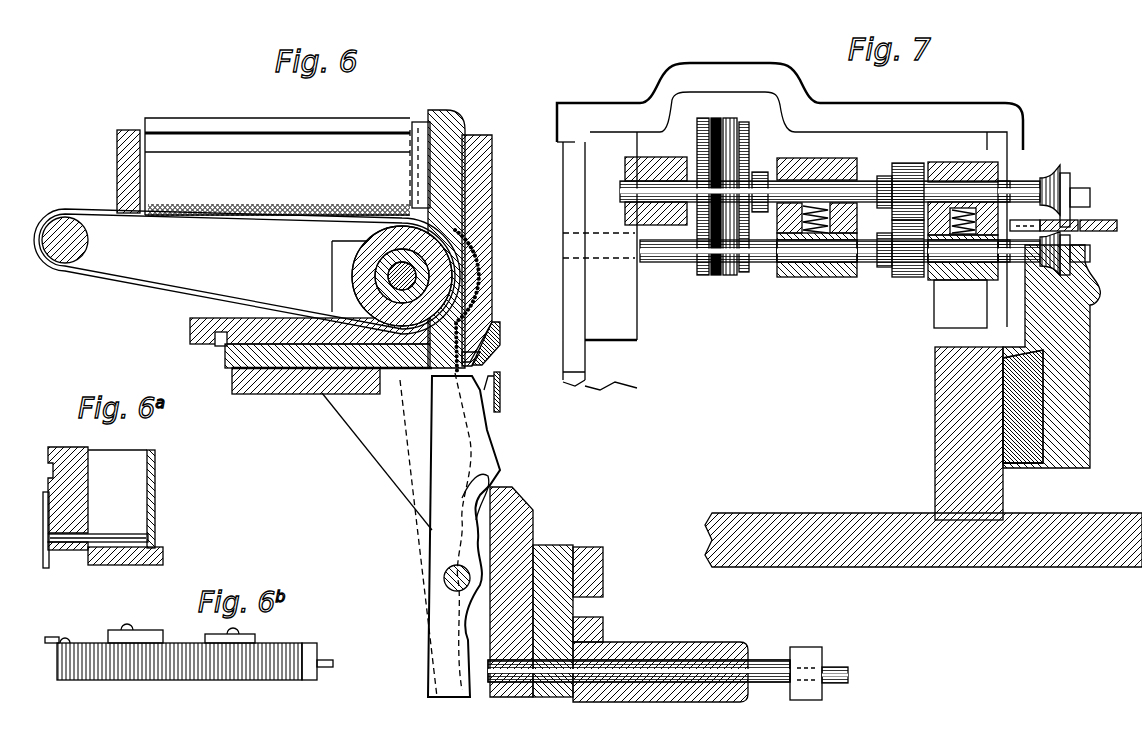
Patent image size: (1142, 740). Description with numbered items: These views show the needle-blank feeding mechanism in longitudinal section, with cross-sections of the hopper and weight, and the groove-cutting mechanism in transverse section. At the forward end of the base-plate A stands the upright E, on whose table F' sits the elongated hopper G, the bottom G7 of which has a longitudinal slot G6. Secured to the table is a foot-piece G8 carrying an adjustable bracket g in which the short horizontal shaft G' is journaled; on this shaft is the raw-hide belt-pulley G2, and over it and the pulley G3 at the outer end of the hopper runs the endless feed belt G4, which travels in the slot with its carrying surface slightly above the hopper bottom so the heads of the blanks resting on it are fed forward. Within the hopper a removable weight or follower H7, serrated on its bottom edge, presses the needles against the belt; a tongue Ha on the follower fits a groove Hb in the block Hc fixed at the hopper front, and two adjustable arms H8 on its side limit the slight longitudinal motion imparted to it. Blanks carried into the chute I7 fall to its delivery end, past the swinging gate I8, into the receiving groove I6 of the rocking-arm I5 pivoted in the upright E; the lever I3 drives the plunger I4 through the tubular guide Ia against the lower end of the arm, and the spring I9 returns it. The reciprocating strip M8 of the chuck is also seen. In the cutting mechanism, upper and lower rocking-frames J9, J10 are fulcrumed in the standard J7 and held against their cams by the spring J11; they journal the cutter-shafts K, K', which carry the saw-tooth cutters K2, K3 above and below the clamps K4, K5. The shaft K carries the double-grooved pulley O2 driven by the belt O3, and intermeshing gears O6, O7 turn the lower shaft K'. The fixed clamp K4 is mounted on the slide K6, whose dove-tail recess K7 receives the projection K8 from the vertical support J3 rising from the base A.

In FIG. 6, the needle-feed box or hopper G is at (113, 171).
In FIG. 6A, the needle-feed box or hopper G is at (164, 499).
In FIG. 6, the removable weight or gravitating follower H7 is at (277, 167).
In FIG. 6A, the removable weight or gravitating follower H7 is at (66, 452).
In FIG. 6B, the removable weight or gravitating follower H7 is at (181, 645).
In FIG. 6, the groove Hb is at (412, 128).
In FIG. 6, the tongue Ha is at (418, 140).
In FIG. 6B, the tongue Ha is at (326, 660).
In FIG. 6, the block Hc is at (462, 125).
In FIG. 6, the pulley G3 is at (43, 243).
In FIG. 6, the endless blank feeder or belt G4 is at (135, 283).
In FIG. 6A, the endless blank feeder or belt G4 is at (62, 555).
In FIG. 6, the short horizontal shaft G' is at (376, 276).
In FIG. 6, the bracket g is at (340, 292).
In FIG. 6, the belt-pulley G2 is at (470, 302).
In FIG. 6, the chute I7 is at (496, 336).
In FIG. 6, the swinging gate or stop I8 is at (488, 362).
In FIG. 6, the needle-blank receiving groove I6 is at (505, 400).
In FIG. 6, the foot-piece G8 is at (228, 352).
In FIG. 6, the table F' is at (306, 392).
In FIG. 6, the spring I9 is at (476, 540).
In FIG. 6, the rocking-arm I5 is at (455, 605).
In FIG. 6, the upright E is at (536, 514).
In FIG. 6, the strong metallic strip M8 is at (606, 574).
In FIG. 6, the reciprocating rod or plunger I4 is at (640, 665).
In FIG. 6, the tubular guide Ia is at (705, 652).
In FIG. 6, the lever I3 is at (808, 650).
In FIG. 6A, the longitudinal slot G6 is at (86, 550).
In FIG. 6A, the bottom G7 is at (152, 565).
In FIG. 6B, the arms H8 is at (150, 624).
In FIG. 7, the double-grooved pulley O2 is at (712, 122).
In FIG. 7, the driving-belt O3 is at (733, 122).
In FIG. 7, the spring J11 is at (798, 160).
In FIG. 7, the upper rocking-frame J9 is at (836, 160).
In FIG. 7, the cutter-carrying shaft K is at (815, 179).
In FIG. 7, the gear O6 is at (910, 164).
In FIG. 7, the movable needle-clamp K5 is at (1035, 190).
In FIG. 7, the saw-tooth cutter K2 is at (1066, 175).
In FIG. 7, the fixed needle-clamp K4 is at (1078, 222).
In FIG. 7, the saw-tooth cutter K3 is at (1060, 274).
In FIG. 7, the standard J7 is at (790, 226).
In FIG. 7, the lower rocking-frame J10 is at (802, 278).
In FIG. 7, the cutter-carrying shaft K' is at (825, 270).
In FIG. 7, the gear O7 is at (904, 278).
In FIG. 7, the slide K6 is at (1088, 358).
In FIG. 7, the dove-tail projection K8 is at (1023, 406).
In FIG. 7, the vertical support J3 is at (935, 420).
In FIG. 7, the dove-tail recess K7 is at (1055, 468).
In FIG. 7, the base-plate or bed A is at (923, 529).